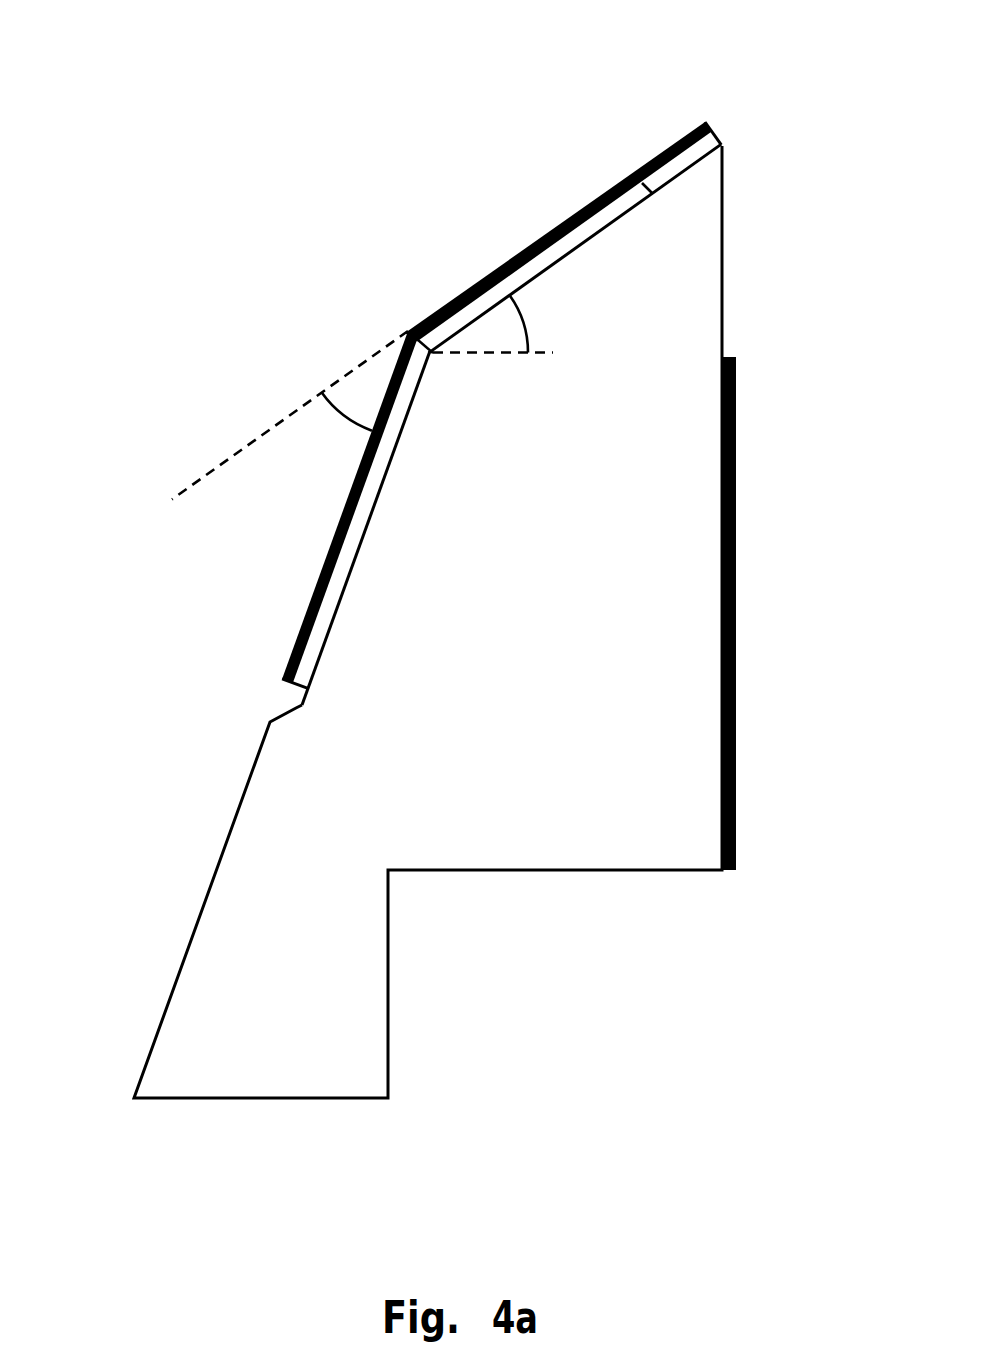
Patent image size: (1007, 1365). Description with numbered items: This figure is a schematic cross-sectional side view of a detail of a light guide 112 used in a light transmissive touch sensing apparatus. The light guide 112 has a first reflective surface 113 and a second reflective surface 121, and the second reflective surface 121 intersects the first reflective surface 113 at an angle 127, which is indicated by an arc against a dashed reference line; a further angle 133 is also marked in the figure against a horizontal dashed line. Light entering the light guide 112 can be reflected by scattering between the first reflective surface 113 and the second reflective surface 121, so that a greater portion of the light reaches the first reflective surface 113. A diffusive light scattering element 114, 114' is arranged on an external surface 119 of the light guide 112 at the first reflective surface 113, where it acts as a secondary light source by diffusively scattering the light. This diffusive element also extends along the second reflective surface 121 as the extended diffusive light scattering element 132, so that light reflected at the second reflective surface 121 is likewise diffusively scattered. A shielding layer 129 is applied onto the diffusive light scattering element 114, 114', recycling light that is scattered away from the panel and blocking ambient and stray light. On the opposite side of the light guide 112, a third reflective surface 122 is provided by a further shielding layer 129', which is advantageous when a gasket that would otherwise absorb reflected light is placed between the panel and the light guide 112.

The light guide 112 is at (186, 72).
The first reflective surface 113 is at (590, 237).
The diffusive light scattering element 114 is at (737, 239).
The diffusive light scattering element 114' is at (575, 237).
The external surface 119 is at (628, 172).
The second reflective surface 121 is at (397, 519).
The third reflective surface 122 is at (721, 810).
The angle 127 is at (350, 424).
The shielding layer 129 is at (520, 232).
The shielding layer 129' is at (781, 613).
The extended diffusive light scattering element 132 is at (327, 613).
The inclination angle of first panel 133 is at (524, 321).